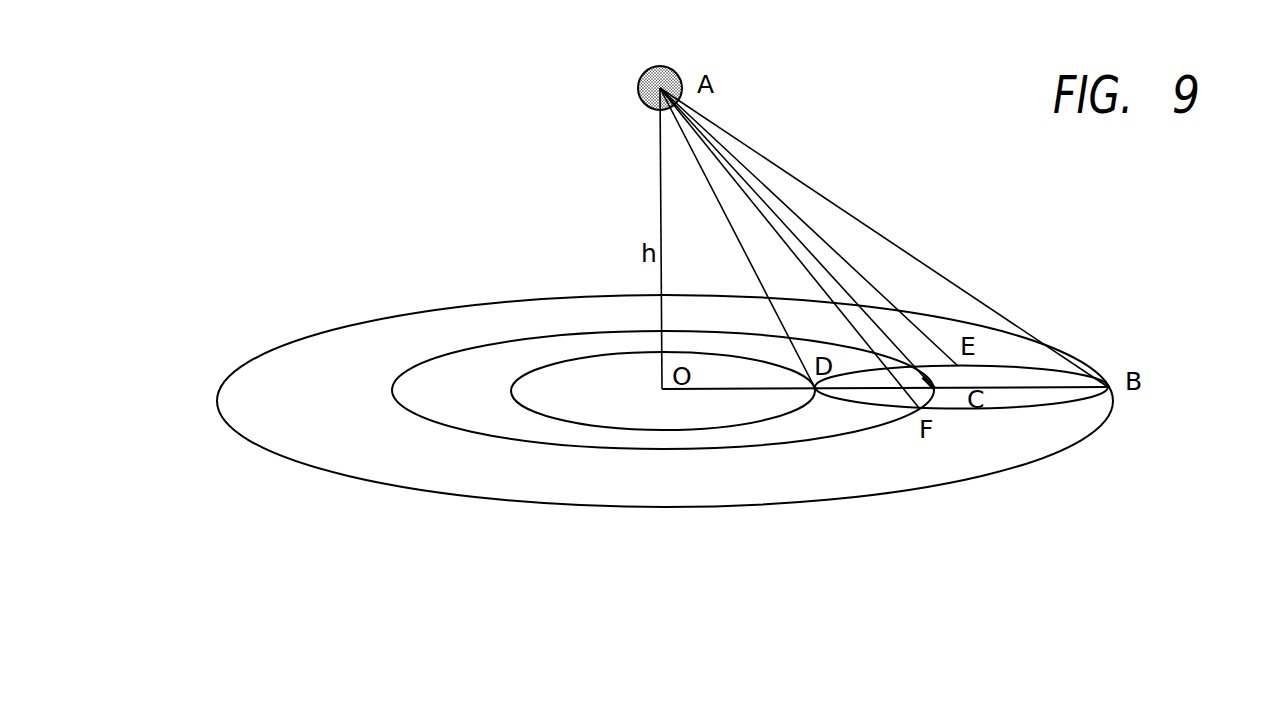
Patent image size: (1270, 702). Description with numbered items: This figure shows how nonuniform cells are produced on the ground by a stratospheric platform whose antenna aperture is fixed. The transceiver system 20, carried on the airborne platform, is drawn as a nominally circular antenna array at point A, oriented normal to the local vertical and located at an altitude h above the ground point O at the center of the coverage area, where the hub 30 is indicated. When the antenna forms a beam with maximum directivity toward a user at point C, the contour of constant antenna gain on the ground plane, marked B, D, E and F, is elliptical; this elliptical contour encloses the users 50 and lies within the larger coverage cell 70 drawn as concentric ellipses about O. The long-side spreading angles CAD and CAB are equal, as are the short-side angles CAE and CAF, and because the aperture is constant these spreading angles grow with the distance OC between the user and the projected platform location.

The transceiver system 20 is at (640, 83).
The hub 30 is at (662, 389).
The users 50 is at (958, 388).
The cell 70 is at (1050, 407).